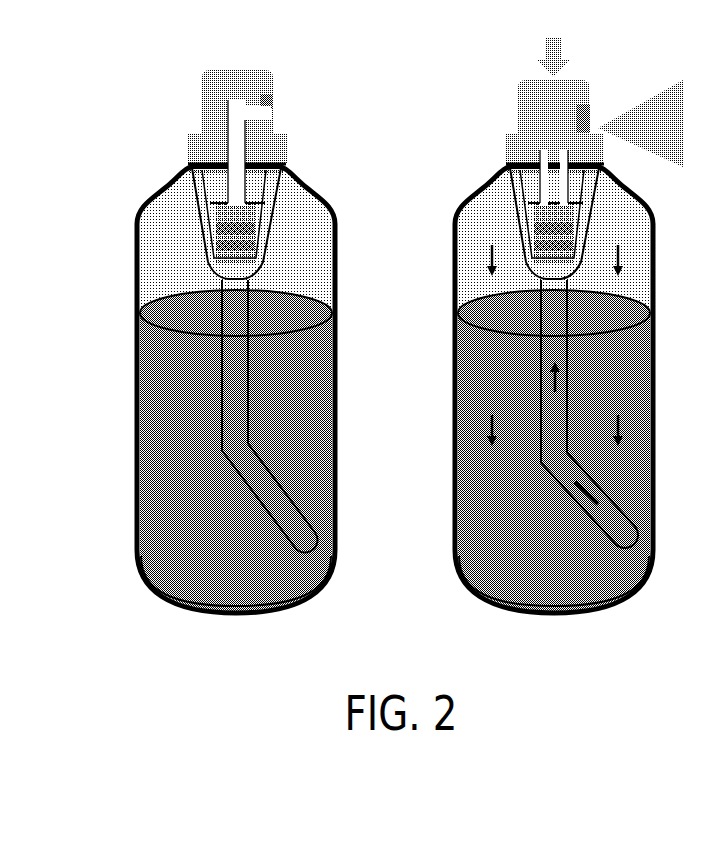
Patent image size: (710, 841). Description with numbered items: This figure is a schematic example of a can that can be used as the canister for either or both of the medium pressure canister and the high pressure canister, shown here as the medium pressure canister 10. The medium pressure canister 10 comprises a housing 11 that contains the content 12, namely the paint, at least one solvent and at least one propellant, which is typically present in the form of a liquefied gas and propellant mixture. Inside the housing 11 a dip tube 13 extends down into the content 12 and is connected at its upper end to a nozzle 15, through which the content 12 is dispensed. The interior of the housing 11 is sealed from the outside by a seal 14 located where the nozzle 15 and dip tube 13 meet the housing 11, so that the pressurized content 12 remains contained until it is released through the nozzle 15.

The medium pressure canister 10 is at (138, 83).
The housing 11 is at (447, 418).
The content 12 is at (497, 519).
The dip tube 13 is at (531, 462).
The seal 14 is at (494, 179).
The nozzle 15 is at (528, 126).